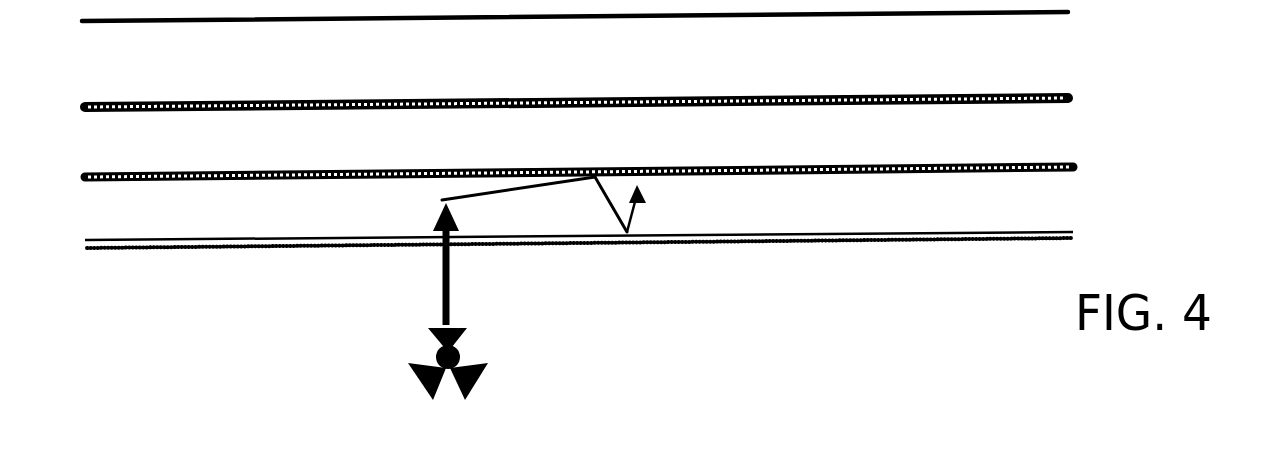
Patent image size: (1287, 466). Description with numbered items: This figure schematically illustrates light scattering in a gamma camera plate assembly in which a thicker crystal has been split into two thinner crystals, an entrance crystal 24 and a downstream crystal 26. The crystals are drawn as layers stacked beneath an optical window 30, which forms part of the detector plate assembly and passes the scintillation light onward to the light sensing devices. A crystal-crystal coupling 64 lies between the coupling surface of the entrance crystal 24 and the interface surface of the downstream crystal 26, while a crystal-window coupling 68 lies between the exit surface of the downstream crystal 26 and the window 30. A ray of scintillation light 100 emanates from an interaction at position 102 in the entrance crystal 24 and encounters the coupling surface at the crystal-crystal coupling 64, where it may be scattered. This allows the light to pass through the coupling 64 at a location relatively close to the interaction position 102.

The optical window 30 is at (1043, 60).
The crystal-window coupling 68 is at (1047, 93).
The downstream crystal 26 is at (1042, 129).
The crystal-crystal coupling 64 is at (1043, 163).
The entrance crystal 24 is at (1052, 200).
The ray of scintillation light 100 is at (517, 188).
The interaction position 102 is at (436, 192).